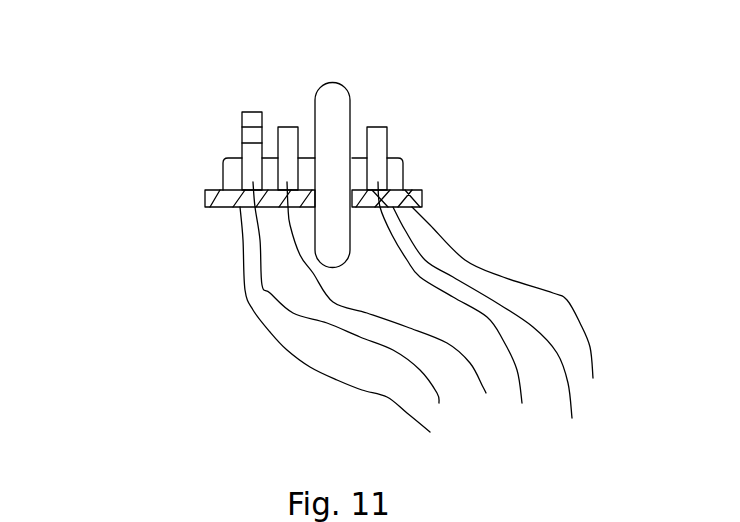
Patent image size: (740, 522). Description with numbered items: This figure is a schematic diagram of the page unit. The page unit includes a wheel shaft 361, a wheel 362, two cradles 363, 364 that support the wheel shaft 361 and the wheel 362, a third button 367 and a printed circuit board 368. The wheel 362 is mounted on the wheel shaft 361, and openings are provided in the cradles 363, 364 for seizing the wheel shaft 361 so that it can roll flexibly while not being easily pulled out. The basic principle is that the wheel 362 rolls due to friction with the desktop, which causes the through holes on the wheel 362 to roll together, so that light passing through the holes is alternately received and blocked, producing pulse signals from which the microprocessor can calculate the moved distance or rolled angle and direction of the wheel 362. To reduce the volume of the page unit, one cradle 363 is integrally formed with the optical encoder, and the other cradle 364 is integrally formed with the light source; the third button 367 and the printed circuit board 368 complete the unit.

The wheel shaft 361 is at (398, 173).
The wheel 362 is at (328, 92).
The cradle 363 is at (382, 137).
The cradle 364 is at (290, 133).
The third button 367 is at (255, 121).
The printed circuit board 368 is at (220, 205).